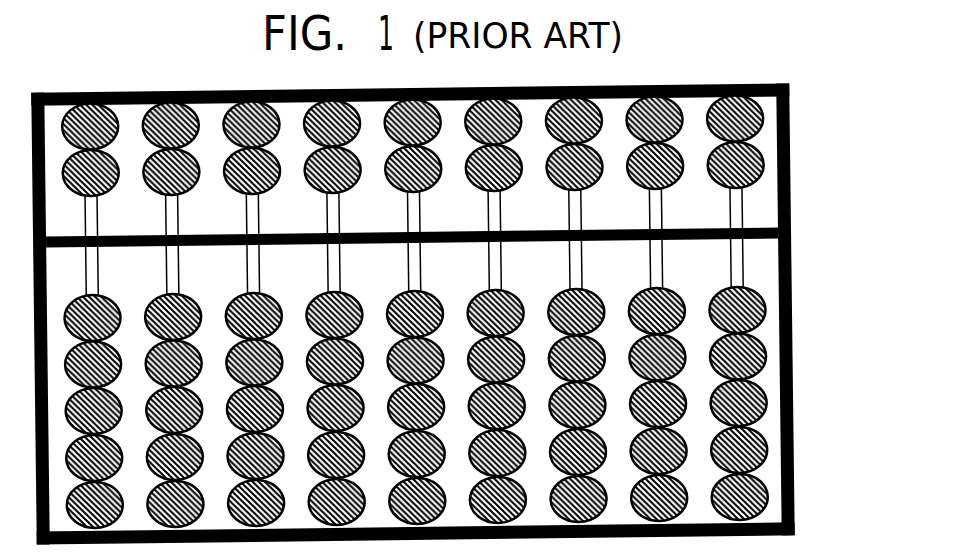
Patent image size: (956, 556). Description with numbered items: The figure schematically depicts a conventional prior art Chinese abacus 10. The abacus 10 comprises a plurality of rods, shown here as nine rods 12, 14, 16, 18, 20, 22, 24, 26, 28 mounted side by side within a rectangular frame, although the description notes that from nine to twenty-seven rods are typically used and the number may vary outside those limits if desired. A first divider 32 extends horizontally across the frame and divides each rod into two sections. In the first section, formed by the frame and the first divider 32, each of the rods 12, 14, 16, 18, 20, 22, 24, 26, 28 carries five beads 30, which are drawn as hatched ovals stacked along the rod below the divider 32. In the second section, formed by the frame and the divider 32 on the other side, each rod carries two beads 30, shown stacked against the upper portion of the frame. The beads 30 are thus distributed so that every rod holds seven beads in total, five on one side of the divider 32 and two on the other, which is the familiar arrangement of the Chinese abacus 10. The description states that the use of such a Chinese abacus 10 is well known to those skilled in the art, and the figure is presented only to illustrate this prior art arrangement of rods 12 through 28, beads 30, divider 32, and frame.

The Chinese abacus 10 is at (702, 78).
The rod 12 is at (744, 245).
The rod 14 is at (663, 245).
The rod 16 is at (582, 245).
The rod 18 is at (502, 245).
The rod 20 is at (421, 245).
The rod 22 is at (340, 245).
The rod 24 is at (260, 245).
The rod 26 is at (179, 245).
The rod 28 is at (98, 245).
The beads 30 is at (767, 163).
The first divider 32 is at (590, 227).